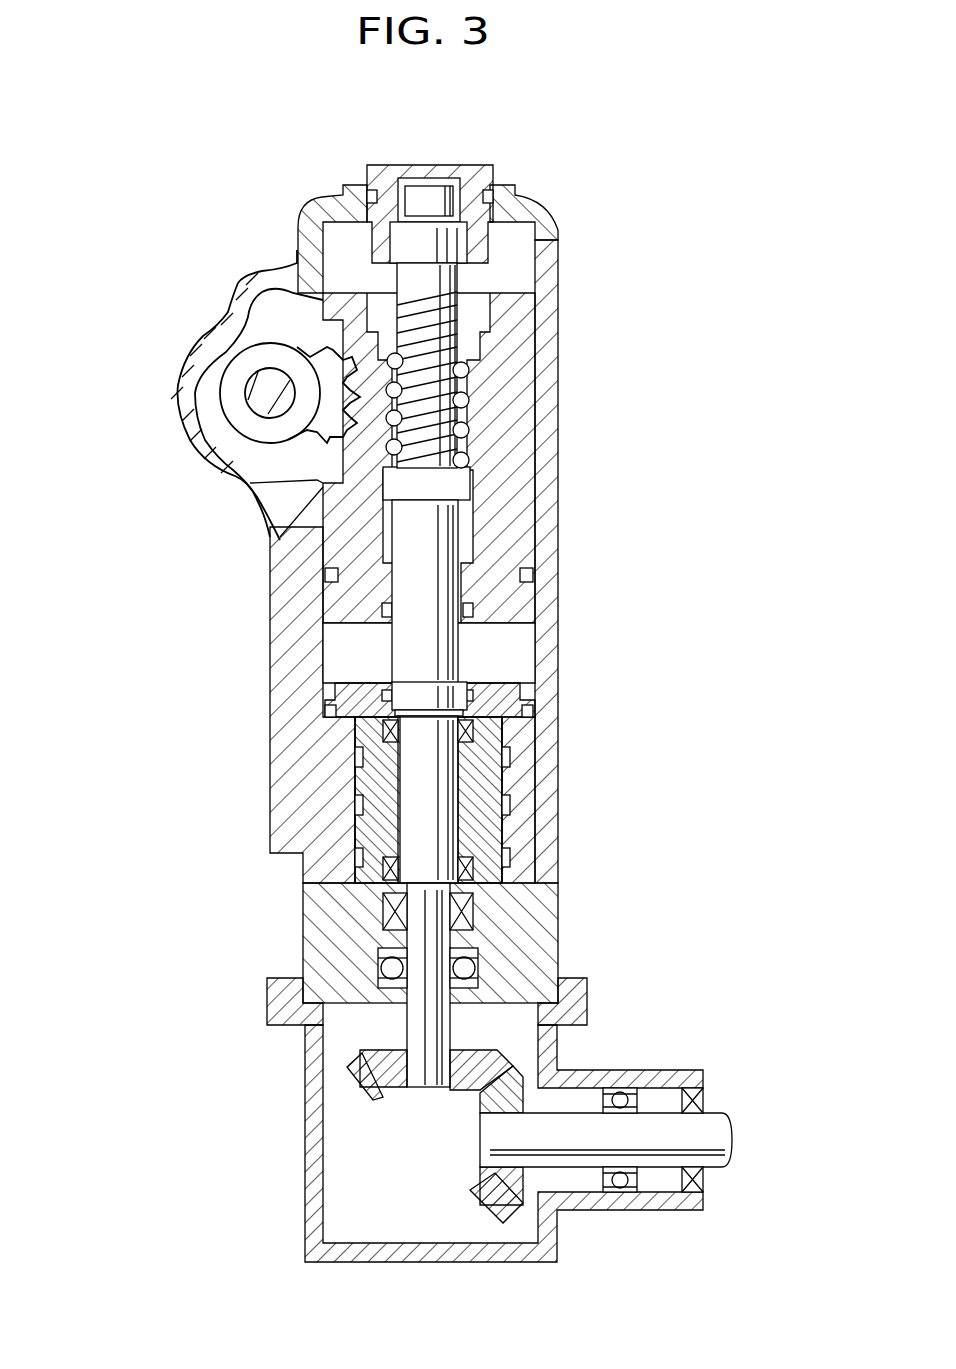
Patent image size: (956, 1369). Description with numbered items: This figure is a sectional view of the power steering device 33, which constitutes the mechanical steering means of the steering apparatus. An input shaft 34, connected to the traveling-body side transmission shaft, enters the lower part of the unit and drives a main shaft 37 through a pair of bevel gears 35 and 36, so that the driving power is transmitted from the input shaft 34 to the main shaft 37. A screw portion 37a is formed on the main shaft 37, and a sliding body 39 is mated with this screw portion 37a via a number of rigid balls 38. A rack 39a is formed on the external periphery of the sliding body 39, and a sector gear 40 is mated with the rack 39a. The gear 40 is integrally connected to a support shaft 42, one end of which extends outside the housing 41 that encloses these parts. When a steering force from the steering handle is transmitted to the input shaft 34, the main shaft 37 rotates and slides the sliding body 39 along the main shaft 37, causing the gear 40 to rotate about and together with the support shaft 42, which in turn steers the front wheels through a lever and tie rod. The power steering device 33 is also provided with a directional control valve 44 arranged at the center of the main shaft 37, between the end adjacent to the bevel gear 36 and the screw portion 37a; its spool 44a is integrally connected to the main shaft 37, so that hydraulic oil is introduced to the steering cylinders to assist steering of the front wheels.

The power steering device 33 is at (686, 255).
The input shaft 34 is at (662, 1130).
The bevel gear 35 is at (495, 1207).
The bevel gear 36 is at (345, 1092).
The main shaft 37 is at (420, 655).
The screw portion 37a is at (420, 388).
The rigid balls 38 is at (470, 432).
The sliding body 39 is at (515, 540).
The rack 39a is at (265, 507).
The sector gear 40 is at (265, 360).
The housing 41 is at (285, 625).
The support shaft 42 is at (237, 398).
The directional control valve 44 is at (416, 800).
The spool 44a is at (370, 780).